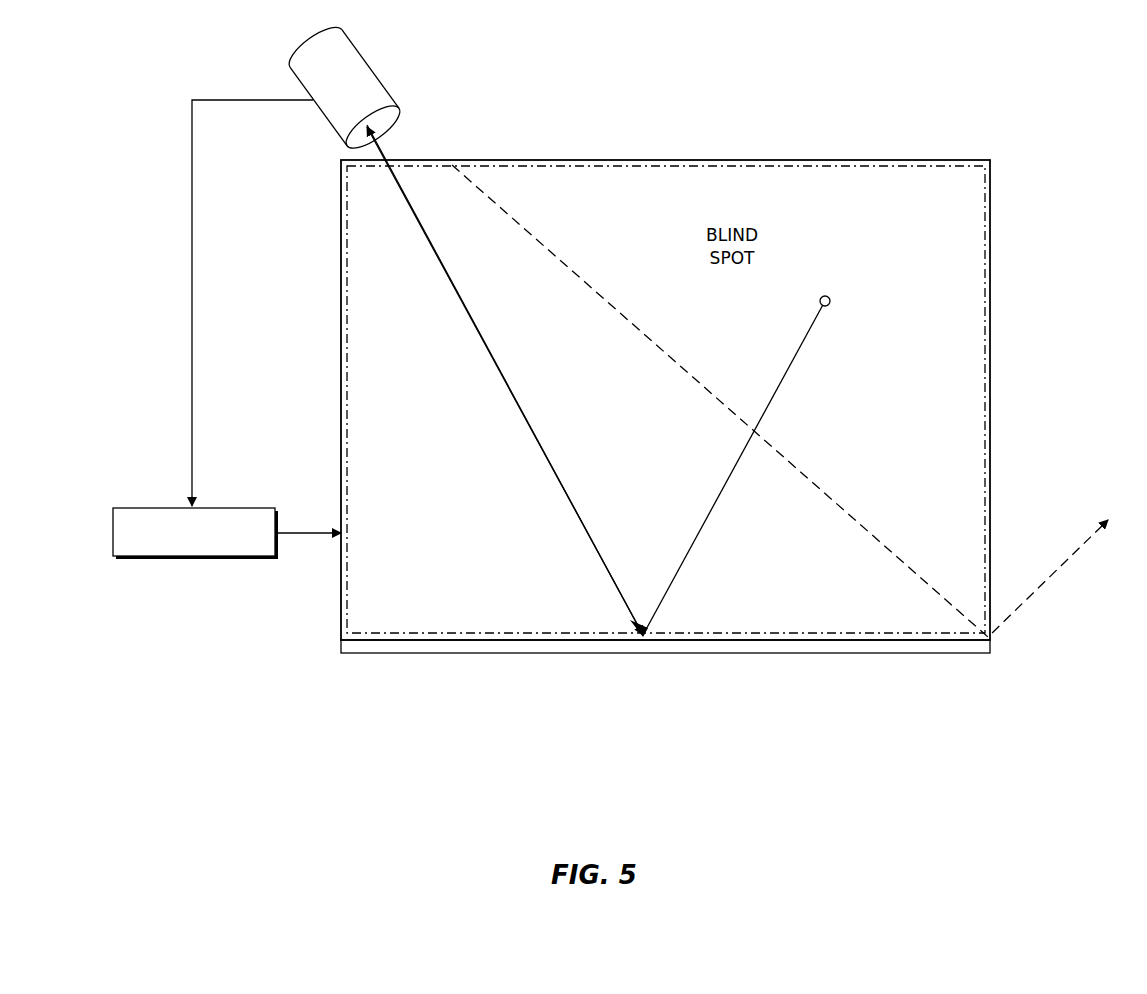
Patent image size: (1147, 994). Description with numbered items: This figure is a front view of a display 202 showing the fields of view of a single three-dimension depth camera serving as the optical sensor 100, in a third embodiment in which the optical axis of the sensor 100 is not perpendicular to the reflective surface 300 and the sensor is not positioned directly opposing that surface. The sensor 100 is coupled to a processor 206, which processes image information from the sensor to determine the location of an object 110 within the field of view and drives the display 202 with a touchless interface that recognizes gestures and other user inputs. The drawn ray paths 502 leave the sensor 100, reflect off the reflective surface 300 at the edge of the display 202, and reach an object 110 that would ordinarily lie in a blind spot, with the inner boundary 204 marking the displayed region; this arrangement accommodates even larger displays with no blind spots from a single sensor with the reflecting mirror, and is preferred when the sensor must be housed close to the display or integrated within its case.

The optical sensor 100 is at (374, 66).
The object 110 is at (827, 296).
The display 202 is at (341, 206).
The inner boundary of blind spot region 204 is at (347, 272).
The processor 206 is at (212, 508).
The reflective surface 300 is at (767, 647).
The sensor signal path 502 is at (570, 508).